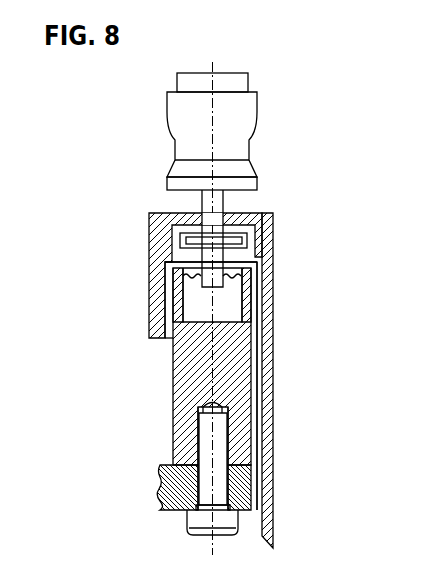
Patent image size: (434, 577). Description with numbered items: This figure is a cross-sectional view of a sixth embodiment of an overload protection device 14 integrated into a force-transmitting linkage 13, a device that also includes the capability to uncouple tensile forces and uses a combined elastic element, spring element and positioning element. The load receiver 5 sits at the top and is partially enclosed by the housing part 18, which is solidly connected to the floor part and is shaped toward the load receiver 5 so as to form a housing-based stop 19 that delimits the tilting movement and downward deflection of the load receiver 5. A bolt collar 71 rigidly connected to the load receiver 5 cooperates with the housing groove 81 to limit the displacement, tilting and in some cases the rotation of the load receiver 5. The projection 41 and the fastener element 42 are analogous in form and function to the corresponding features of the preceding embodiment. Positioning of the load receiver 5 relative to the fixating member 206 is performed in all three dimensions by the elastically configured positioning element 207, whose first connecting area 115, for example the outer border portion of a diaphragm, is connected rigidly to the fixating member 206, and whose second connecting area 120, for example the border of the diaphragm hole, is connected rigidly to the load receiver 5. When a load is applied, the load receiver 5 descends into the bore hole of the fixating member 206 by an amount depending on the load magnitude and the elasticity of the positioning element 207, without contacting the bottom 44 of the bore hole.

The load receiver 5 is at (238, 165).
The force-transmitting linkage 13 is at (155, 403).
The overload protection device 14 is at (283, 302).
The housing part 18 is at (165, 273).
The housing-based stop 19 is at (273, 235).
The projection 41 is at (162, 493).
The fastener element 42 is at (185, 525).
The bottom of the bore hole 44 is at (223, 322).
The bolt collar 71 is at (182, 231).
The housing groove 81 is at (172, 247).
The first connecting area 115 is at (265, 278).
The second connecting area 120 is at (273, 257).
The fixating member 206 is at (236, 406).
The positioning element 207 is at (175, 284).